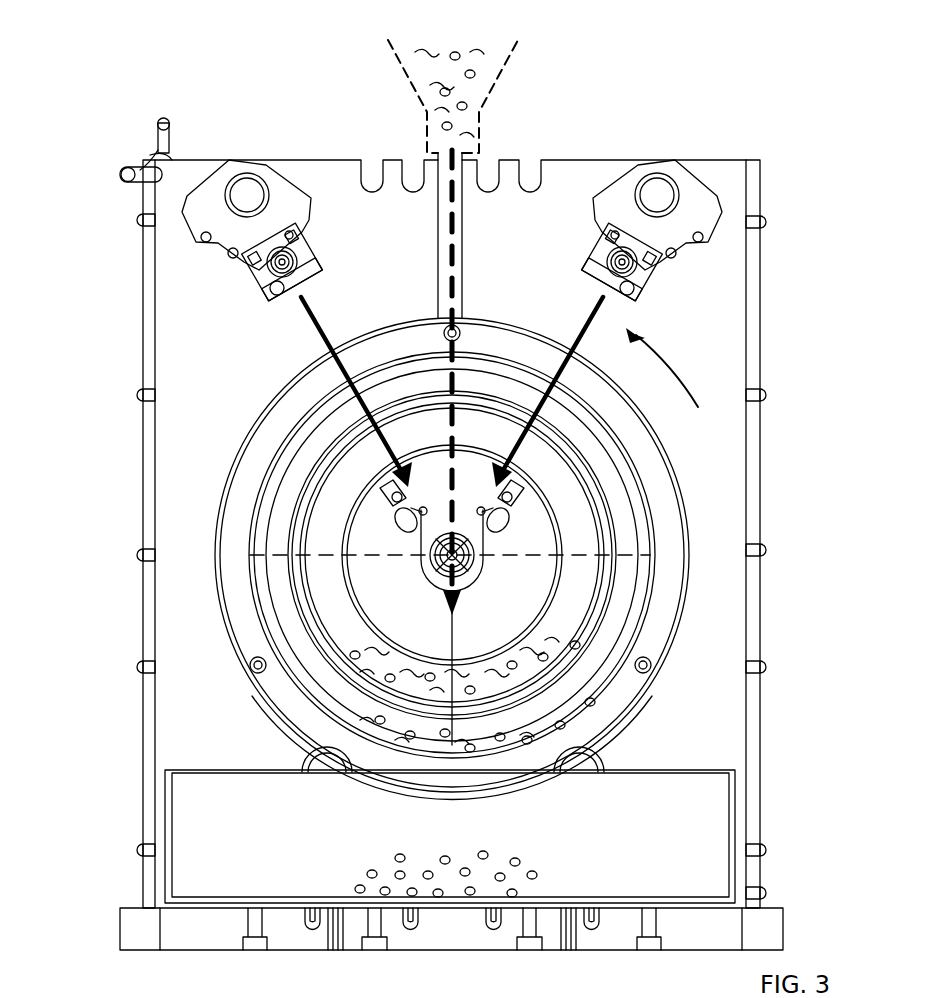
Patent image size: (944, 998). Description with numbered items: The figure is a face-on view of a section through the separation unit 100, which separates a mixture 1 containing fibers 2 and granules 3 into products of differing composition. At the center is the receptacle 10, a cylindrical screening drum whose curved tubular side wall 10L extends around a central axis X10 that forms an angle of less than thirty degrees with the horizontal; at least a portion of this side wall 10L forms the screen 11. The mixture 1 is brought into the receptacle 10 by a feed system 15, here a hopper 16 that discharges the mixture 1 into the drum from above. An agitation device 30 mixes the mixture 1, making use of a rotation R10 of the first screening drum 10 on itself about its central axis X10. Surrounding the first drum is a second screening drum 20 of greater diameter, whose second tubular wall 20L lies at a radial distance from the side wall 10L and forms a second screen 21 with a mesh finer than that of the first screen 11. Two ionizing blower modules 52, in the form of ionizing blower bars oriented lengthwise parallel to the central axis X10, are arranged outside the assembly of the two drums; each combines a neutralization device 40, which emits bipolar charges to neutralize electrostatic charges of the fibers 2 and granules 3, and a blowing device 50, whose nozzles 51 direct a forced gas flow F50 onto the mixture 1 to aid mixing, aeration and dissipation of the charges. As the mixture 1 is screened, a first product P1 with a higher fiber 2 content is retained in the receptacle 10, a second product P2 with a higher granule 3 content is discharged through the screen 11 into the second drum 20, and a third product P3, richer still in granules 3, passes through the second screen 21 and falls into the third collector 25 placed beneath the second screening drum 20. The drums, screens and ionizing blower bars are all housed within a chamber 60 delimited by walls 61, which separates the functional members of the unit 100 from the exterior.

The unit 100 is at (262, 118).
The chamber 60 is at (218, 732).
The walls 61 is at (573, 175).
The third collector 25 is at (700, 868).
The feed system 15 is at (358, 89).
The hopper 16 is at (430, 118).
The mixture 1 is at (472, 94).
The fibers 2 is at (483, 53).
The granules 3 is at (463, 127).
The agitation device 30 is at (702, 541).
The second screening drum 20 is at (575, 667).
The second tubular wall 20L is at (246, 583).
The second screen 21 is at (507, 747).
The receptacle 10 is at (600, 630).
The tubular side wall 10L is at (290, 507).
The screen 11 is at (590, 710).
The rotation R10 is at (678, 367).
The central axis X10 is at (478, 549).
The neutralization device 40 is at (457, 300).
The blowing device 50 is at (627, 253).
The nozzles 51 is at (290, 300).
The ionizing blower module 52 is at (253, 267).
The forced gas flow F50 is at (320, 335).
The first product P1 is at (393, 665).
The second product P2 is at (417, 728).
The third product P3 is at (390, 857).